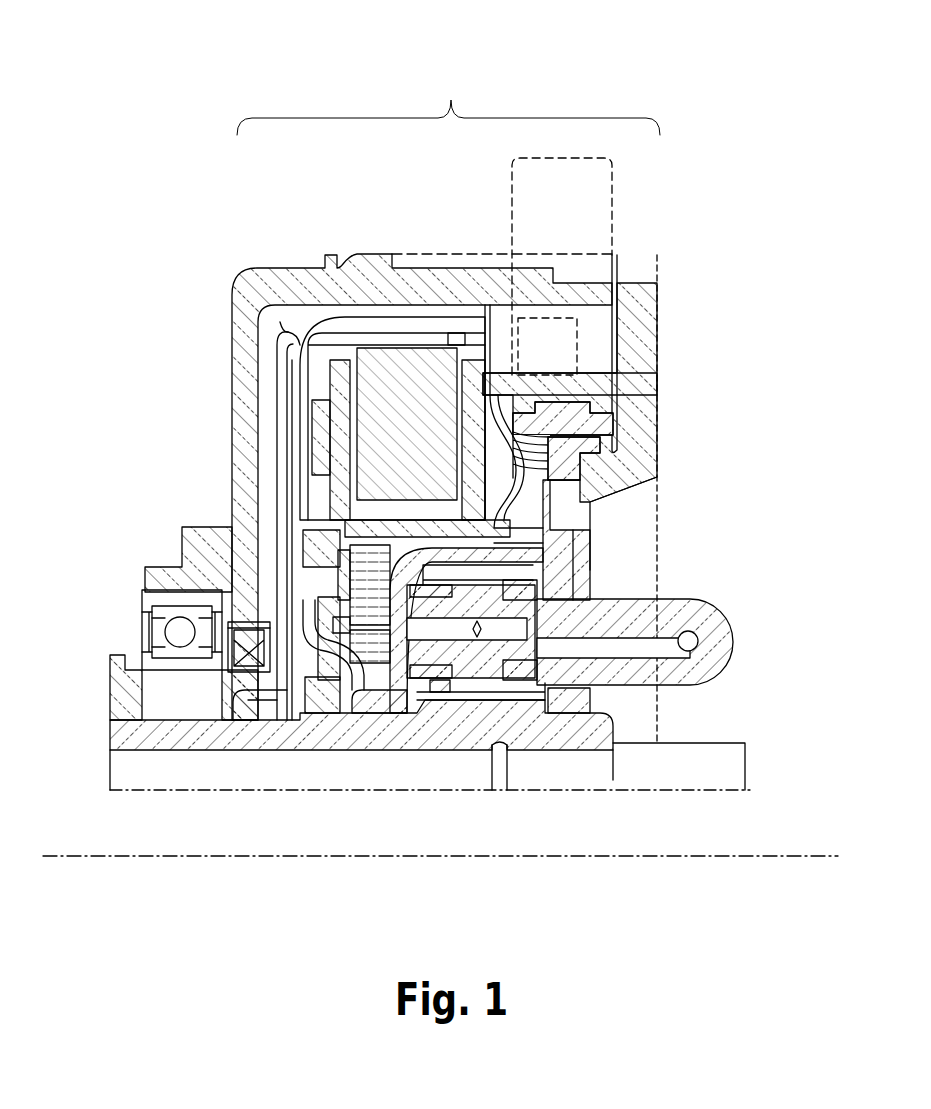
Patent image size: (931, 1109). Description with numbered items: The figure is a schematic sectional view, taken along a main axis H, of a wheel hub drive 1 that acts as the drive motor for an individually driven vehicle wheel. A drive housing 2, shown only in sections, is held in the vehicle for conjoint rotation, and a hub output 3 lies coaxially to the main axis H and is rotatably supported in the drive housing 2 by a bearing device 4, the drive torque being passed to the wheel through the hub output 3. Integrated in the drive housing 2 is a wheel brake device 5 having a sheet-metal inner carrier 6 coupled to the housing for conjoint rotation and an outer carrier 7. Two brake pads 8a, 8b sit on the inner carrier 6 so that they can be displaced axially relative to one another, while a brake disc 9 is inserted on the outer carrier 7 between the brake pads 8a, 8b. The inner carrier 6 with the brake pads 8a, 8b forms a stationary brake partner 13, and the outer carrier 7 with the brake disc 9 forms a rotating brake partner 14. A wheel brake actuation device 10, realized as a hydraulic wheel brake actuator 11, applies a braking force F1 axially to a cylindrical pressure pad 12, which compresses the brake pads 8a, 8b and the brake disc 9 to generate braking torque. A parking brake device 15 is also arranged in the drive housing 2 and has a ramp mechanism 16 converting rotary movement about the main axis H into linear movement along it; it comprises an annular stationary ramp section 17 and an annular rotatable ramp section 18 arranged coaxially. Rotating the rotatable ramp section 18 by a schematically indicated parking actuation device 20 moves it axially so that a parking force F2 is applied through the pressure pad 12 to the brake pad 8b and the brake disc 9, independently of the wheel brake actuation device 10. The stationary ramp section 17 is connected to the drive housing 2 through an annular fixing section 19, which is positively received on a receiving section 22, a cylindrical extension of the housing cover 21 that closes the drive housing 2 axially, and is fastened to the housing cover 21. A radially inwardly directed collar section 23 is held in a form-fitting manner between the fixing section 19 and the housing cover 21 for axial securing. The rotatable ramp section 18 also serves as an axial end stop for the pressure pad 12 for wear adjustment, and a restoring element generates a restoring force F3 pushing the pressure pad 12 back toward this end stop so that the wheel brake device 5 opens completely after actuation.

The wheel hub drive 1 is at (143, 170).
The drive housing 2 is at (448, 100).
The hub output 3 is at (122, 695).
The bearing device 4 is at (148, 600).
The wheel brake device 5 is at (284, 332).
The inner carrier 6 is at (354, 487).
The outer carrier 7 is at (244, 515).
The brake pad 8a is at (338, 477).
The brake pad 8b is at (480, 397).
The brake disc 9 is at (412, 368).
The wheel brake actuation device 10 is at (694, 679).
The hydraulic wheel brake actuator 11 is at (740, 685).
The pressure pad 12 is at (575, 548).
The stationary brake partner 13 is at (305, 540).
The rotating brake partner 14 is at (280, 368).
The parking brake device 15 is at (598, 350).
The ramp mechanism 16 is at (574, 158).
The stationary ramp section 17 is at (577, 420).
The rotatable ramp section 18 is at (597, 383).
The fixing section 19 is at (565, 466).
The parking actuation device 20 is at (577, 318).
The housing cover 21 is at (643, 290).
The receiving section 22 is at (568, 507).
The collar section 23 is at (548, 455).
The main axis H is at (118, 858).
The braking force F1 is at (852, 625).
The parking force F2 is at (605, 82).
The restoring force F3 is at (606, 30).